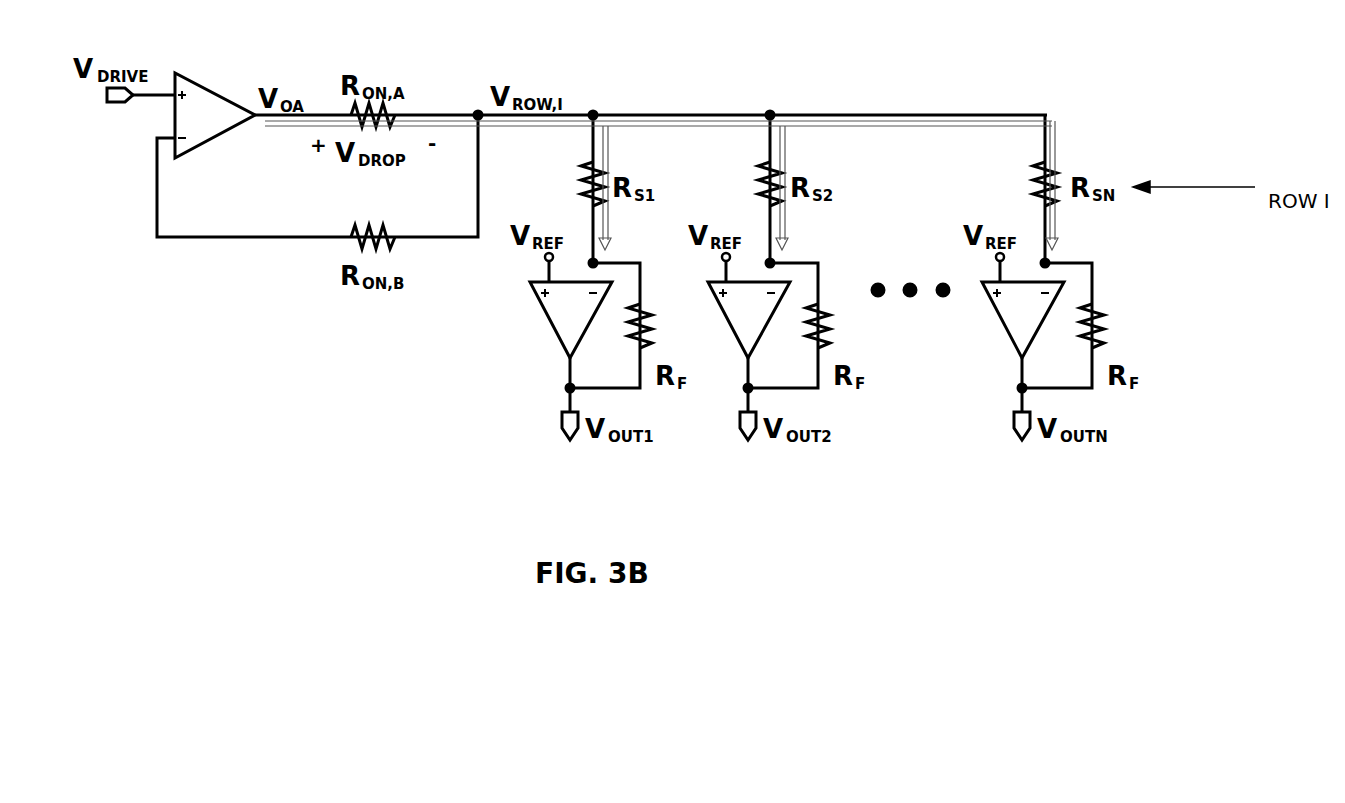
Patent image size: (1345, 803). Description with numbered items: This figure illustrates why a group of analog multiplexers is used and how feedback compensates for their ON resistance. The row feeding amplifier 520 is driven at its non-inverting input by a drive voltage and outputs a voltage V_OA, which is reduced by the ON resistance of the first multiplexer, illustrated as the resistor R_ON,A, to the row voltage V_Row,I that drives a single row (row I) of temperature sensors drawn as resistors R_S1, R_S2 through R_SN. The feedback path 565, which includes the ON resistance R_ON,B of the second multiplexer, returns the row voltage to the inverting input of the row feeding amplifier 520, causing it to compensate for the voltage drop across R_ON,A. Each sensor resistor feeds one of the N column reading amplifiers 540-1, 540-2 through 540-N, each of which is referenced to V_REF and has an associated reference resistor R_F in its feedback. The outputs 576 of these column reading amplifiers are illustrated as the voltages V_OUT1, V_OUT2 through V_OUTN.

The row feeding amplifier 520 is at (210, 85).
The feedback path 565 is at (252, 237).
The column reading amplifier 540-1 is at (530, 345).
The column reading amplifier 540-2 is at (718, 362).
The column reading amplifier 540-N is at (988, 348).
The outputs 576 is at (512, 421).